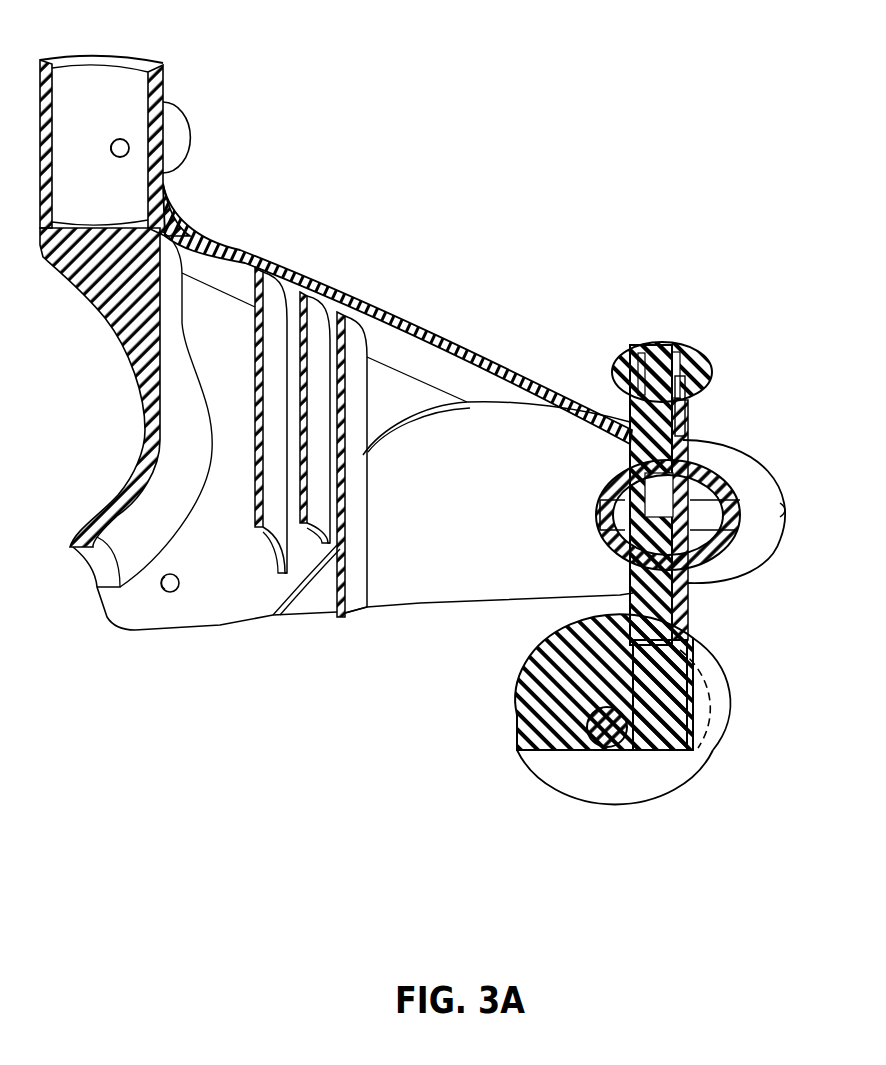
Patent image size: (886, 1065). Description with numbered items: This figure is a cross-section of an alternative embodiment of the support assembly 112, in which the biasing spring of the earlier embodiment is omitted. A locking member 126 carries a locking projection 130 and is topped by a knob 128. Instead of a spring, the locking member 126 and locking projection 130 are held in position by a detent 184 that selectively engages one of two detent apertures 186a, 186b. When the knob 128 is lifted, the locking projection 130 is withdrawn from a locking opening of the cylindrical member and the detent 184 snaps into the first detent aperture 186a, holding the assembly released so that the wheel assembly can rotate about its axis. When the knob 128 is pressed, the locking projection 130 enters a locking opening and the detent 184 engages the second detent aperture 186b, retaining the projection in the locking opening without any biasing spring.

The support assembly 112 is at (304, 266).
The locking member 126 is at (660, 340).
The knob 128 is at (690, 347).
The locking projection 130 is at (683, 378).
The first detent aperture 186a is at (685, 418).
The detent 184 is at (690, 447).
The second detent aperture 186b is at (690, 443).